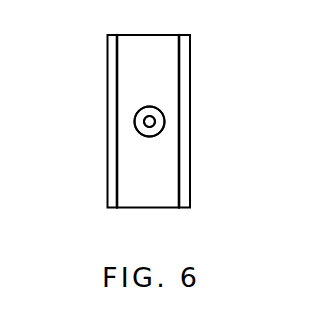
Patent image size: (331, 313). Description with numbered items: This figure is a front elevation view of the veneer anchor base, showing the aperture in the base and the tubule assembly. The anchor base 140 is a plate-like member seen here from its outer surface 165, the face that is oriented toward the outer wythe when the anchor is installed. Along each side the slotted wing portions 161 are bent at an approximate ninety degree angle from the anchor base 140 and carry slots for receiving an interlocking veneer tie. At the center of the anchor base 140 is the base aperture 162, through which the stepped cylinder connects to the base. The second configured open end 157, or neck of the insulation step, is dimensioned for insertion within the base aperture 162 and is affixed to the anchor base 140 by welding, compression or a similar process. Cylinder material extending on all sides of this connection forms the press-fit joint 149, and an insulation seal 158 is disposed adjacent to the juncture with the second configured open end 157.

The anchor base 140 is at (150, 33).
The slotted wing portion 161 is at (184, 60).
The outer surface 165 is at (148, 197).
The joint 149 is at (140, 112).
The insulation seal 158 is at (144, 123).
The base aperture 162 is at (155, 120).
The second configured open end 157 is at (163, 121).